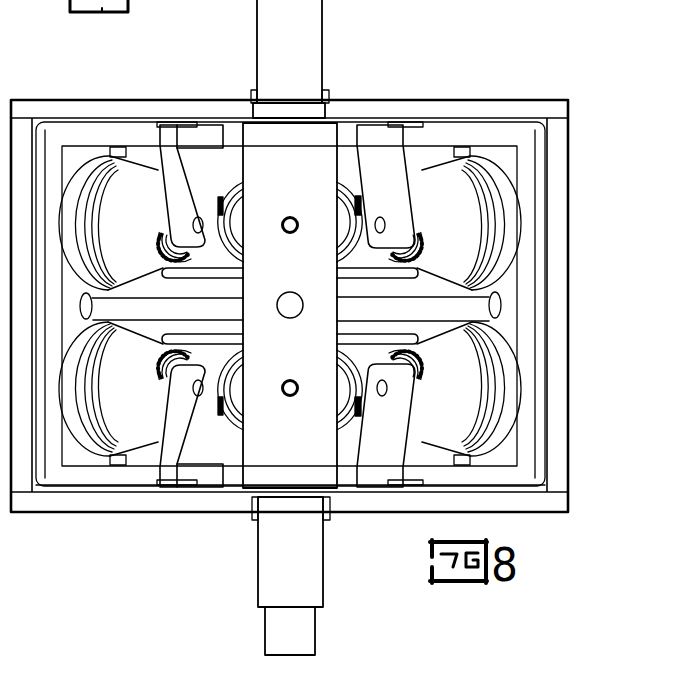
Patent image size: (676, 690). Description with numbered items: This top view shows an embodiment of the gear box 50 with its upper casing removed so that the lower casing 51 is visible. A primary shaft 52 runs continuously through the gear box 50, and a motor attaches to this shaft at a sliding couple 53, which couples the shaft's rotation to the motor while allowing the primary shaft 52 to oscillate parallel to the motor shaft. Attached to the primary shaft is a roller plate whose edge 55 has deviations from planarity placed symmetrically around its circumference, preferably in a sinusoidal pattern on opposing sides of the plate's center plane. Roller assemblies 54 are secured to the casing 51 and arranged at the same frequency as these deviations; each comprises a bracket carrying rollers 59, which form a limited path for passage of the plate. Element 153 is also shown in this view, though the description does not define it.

The gear box 50 is at (543, 73).
The lower casing 51 is at (568, 421).
The primary shaft 52 is at (303, 35).
The sliding couple 53 is at (313, 636).
The roller assembly 54 is at (325, 158).
The edge 55 is at (470, 313).
The rollers 59 is at (468, 410).
The mounting plate 153 is at (433, 290).